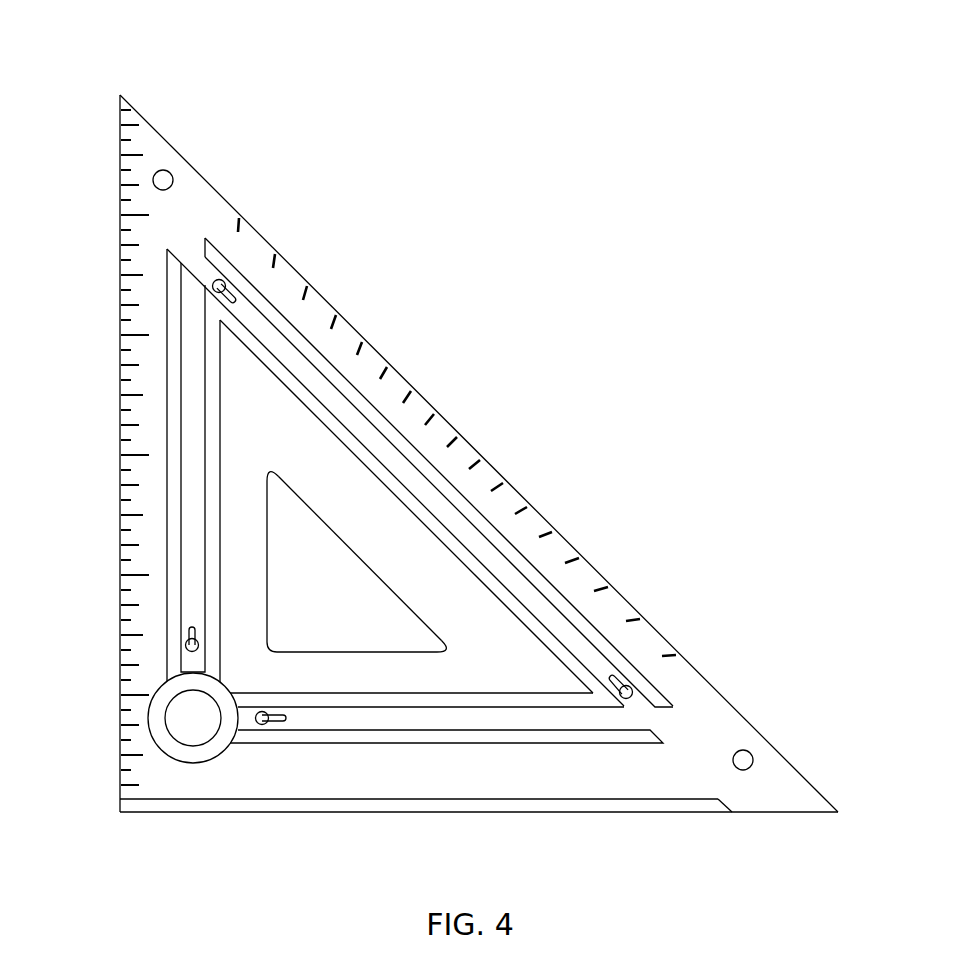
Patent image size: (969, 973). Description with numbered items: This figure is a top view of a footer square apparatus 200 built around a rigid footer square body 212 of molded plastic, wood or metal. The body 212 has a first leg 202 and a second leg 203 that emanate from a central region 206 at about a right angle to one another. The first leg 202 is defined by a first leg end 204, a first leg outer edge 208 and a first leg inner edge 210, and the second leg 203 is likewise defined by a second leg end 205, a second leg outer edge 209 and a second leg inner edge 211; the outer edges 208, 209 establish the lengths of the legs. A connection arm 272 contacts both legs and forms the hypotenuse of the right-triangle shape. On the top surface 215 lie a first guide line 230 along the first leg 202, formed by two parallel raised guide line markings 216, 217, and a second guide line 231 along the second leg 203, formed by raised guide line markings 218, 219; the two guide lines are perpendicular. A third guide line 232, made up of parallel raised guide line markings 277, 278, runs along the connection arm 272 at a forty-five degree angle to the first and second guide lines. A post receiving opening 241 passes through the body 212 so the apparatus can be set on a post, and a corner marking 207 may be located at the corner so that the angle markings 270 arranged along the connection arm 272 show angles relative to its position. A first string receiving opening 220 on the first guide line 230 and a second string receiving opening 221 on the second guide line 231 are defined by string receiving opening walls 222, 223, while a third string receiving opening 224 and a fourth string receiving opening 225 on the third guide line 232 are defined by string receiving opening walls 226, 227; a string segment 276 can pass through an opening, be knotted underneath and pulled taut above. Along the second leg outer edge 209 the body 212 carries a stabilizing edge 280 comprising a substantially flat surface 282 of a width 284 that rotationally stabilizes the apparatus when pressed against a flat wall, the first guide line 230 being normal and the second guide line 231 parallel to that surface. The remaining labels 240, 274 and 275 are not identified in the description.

The footer square apparatus 200 is at (577, 298).
The first leg 202 is at (103, 272).
The second leg 203 is at (542, 826).
The first leg end 204 is at (122, 97).
The second leg end 205 is at (838, 811).
The central region 206 is at (112, 810).
The corner marking 207 is at (123, 813).
The first leg outer edge 208 is at (119, 487).
The second leg outer edge 209 is at (486, 813).
The first leg inner edge 210 is at (268, 508).
The second leg inner edge 211 is at (348, 652).
The footer square body 212 is at (567, 482).
The top surface 215 is at (362, 790).
The raised guide line marking 216 is at (165, 395).
The raised guide line marking 217 is at (221, 385).
The raised guide line marking 218 is at (340, 688).
The raised guide line marking 219 is at (430, 745).
The first string receiving opening 220 is at (196, 640).
The second string receiving opening 221 is at (262, 714).
The string receiving opening wall 222 is at (184, 640).
The string receiving opening wall 223 is at (266, 727).
The third string receiving opening 224 is at (628, 688).
The fourth string receiving opening 225 is at (236, 296).
The string receiving opening wall 226 is at (634, 700).
The string receiving opening wall 227 is at (213, 282).
The first guide line 230 is at (228, 455).
The second guide line 231 is at (478, 682).
The third guide line 232 is at (388, 500).
The pivot hole 240 is at (203, 735).
The post receiving opening 241 is at (150, 718).
The angle marking 270 is at (309, 296).
The connection arm 272 is at (312, 255).
The scale portion 274 is at (420, 362).
The aperture hypotenuse edge 275 is at (385, 572).
The string segment 276 is at (580, 555).
The raised guide line marking 277 is at (416, 520).
The raised guide line marking 278 is at (417, 445).
The stabilizing edge 280 is at (612, 826).
The substantially flat surface 282 is at (714, 813).
The width 284 is at (652, 808).